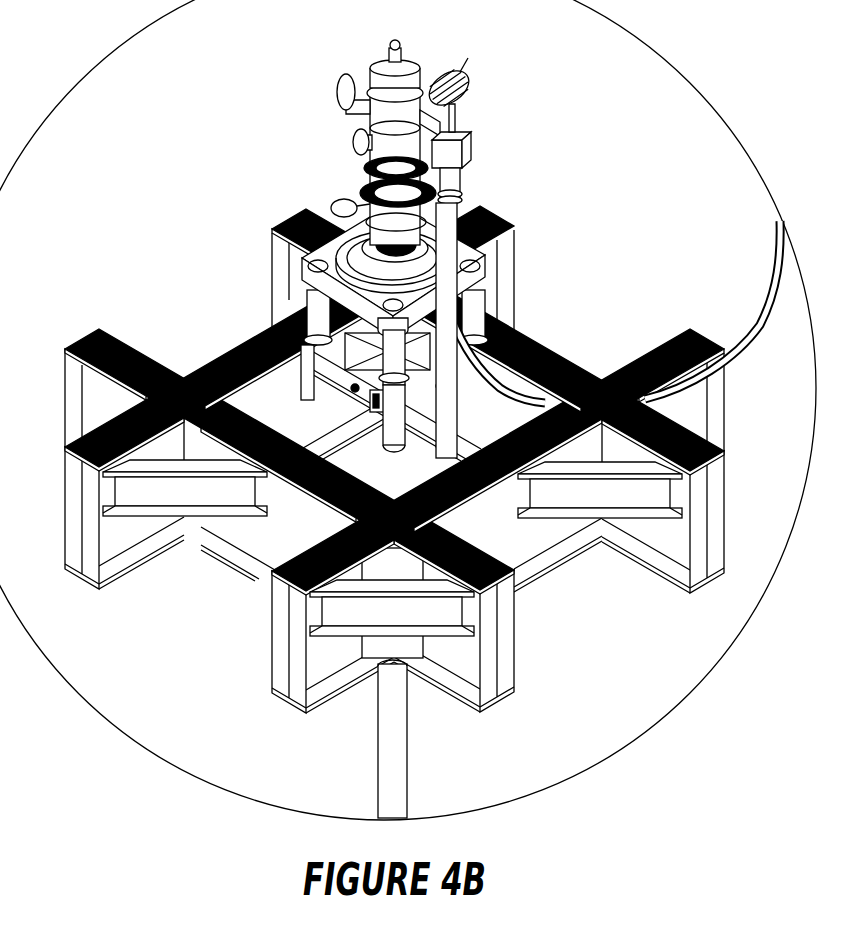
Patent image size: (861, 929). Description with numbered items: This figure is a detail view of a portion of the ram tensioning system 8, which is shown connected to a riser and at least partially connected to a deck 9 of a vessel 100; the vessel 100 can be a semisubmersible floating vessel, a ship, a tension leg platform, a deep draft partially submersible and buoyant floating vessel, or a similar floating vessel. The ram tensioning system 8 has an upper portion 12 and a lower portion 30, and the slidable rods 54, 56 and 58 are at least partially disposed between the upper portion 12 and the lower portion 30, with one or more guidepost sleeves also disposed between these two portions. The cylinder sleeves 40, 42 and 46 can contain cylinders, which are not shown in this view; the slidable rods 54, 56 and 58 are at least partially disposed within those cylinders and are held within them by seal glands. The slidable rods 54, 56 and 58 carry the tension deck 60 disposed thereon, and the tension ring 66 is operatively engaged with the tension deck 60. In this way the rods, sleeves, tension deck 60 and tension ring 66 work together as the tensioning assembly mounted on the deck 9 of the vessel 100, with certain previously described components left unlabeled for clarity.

The ram tensioning system 8 is at (517, 253).
The deck 9 is at (97, 333).
The upper portion 12 is at (305, 325).
The lower portion 30 is at (303, 401).
The cylinder sleeve 40 is at (407, 418).
The cylinder sleeve 42 is at (309, 381).
The cylinder sleeve 46 is at (481, 361).
The slidable rod 54 is at (474, 319).
The slidable rod 56 is at (310, 318).
The slidable rod 58 is at (343, 378).
The tension deck 60 is at (306, 260).
The tension ring 66 is at (350, 255).
The vessel 100 is at (394, 512).